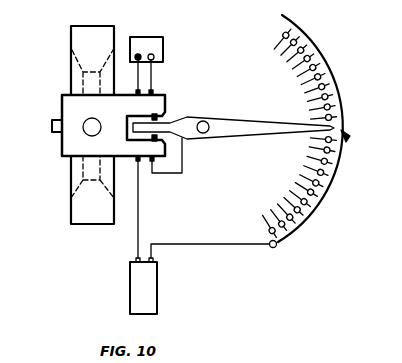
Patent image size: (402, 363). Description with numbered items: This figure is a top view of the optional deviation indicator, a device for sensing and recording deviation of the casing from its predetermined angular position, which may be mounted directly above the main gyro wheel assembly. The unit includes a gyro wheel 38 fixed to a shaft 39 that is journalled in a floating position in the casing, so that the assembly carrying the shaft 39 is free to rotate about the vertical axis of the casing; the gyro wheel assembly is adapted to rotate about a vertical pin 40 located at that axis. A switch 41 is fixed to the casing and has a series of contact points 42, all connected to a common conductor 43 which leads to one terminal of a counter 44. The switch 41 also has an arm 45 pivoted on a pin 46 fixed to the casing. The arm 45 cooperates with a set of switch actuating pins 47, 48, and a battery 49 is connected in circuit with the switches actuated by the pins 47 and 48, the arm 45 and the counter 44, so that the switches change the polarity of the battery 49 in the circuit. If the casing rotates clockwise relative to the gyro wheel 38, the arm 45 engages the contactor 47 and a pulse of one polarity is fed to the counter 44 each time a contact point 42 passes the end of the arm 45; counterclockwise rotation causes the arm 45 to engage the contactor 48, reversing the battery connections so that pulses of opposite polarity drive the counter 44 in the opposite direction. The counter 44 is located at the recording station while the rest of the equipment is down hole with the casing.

The gyro wheel 38 is at (70, 216).
The shaft 39 is at (53, 132).
The vertical pin 40 is at (97, 134).
The switch 41 is at (347, 138).
The contact points 42 is at (310, 42).
The common conductor 43 is at (280, 241).
The counter 44 is at (157, 306).
The arm 45 is at (242, 133).
The pin 46 is at (209, 121).
The switch actuating pin 47 is at (160, 115).
The switch actuating pin 48 is at (158, 139).
The battery 49 is at (159, 44).